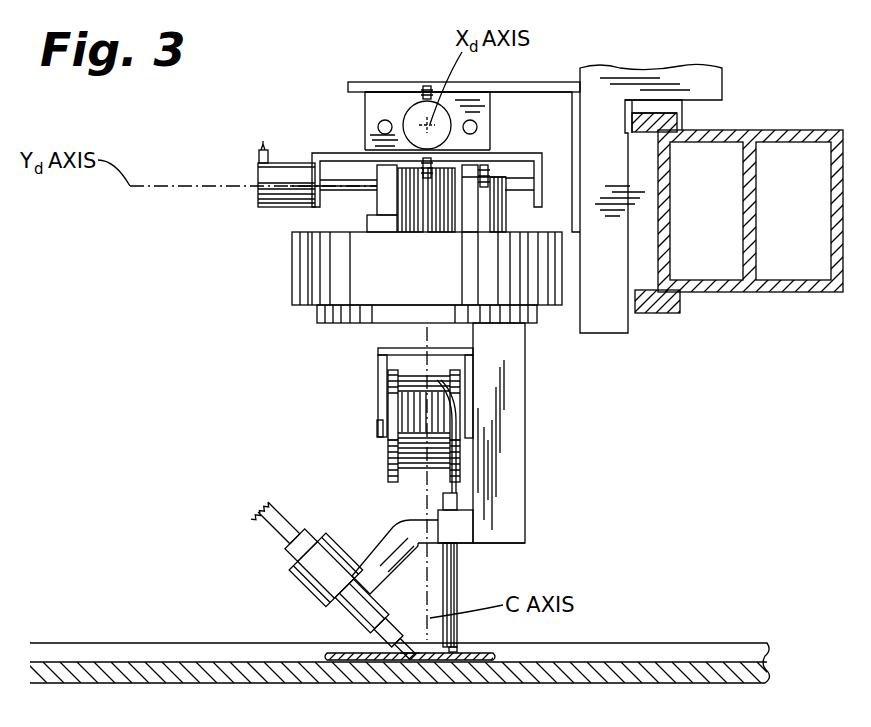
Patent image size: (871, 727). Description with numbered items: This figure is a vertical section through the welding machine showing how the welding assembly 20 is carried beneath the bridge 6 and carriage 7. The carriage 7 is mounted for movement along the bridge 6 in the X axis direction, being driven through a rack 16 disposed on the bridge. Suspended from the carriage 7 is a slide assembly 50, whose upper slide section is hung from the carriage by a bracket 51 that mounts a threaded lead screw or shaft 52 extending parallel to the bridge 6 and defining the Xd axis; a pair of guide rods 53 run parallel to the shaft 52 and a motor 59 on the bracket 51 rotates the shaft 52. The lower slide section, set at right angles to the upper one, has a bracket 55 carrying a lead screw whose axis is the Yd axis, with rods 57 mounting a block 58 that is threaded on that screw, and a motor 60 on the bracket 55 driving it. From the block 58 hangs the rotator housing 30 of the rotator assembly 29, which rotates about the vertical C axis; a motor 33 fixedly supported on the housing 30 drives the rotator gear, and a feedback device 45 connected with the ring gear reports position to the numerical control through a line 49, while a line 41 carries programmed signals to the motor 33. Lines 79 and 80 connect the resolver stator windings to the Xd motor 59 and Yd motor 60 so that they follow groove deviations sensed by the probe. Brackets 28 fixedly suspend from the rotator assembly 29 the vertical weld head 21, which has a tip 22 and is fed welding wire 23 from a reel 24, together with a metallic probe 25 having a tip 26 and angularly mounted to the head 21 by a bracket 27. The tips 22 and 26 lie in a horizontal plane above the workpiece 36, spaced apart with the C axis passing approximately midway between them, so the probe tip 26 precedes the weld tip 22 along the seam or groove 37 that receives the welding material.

The transverse support or bridge 6 is at (783, 130).
The carriage 7 is at (632, 78).
The rack 16 is at (675, 112).
The welding assembly 20 is at (558, 437).
The vertical weld head 21 is at (460, 567).
The tip 22 is at (460, 645).
The welding wire 23 is at (420, 446).
The reel 24 is at (390, 476).
The metallic probe 25 is at (300, 582).
The tip 26 is at (403, 658).
The bracket 27 is at (392, 538).
The brackets 28 is at (517, 387).
The rotator assembly 29 is at (215, 266).
The rotator housing 30 is at (292, 288).
The motor 33 is at (430, 217).
The workpiece 36 is at (660, 643).
The seam or groove 37 is at (362, 652).
The line 41 is at (423, 218).
The feedback device 45 is at (494, 216).
The line 49 is at (487, 168).
The slide assembly 50 is at (290, 100).
The bracket 51 is at (368, 106).
The threaded lead screw or shaft 52 is at (412, 102).
The guide rods 53 is at (378, 127).
The bracket 55 is at (542, 162).
The rods 57 is at (350, 182).
The block 58 is at (383, 226).
The motor 59 is at (434, 88).
The motor 60 is at (258, 178).
The line 79 is at (260, 153).
The line 80 is at (426, 88).